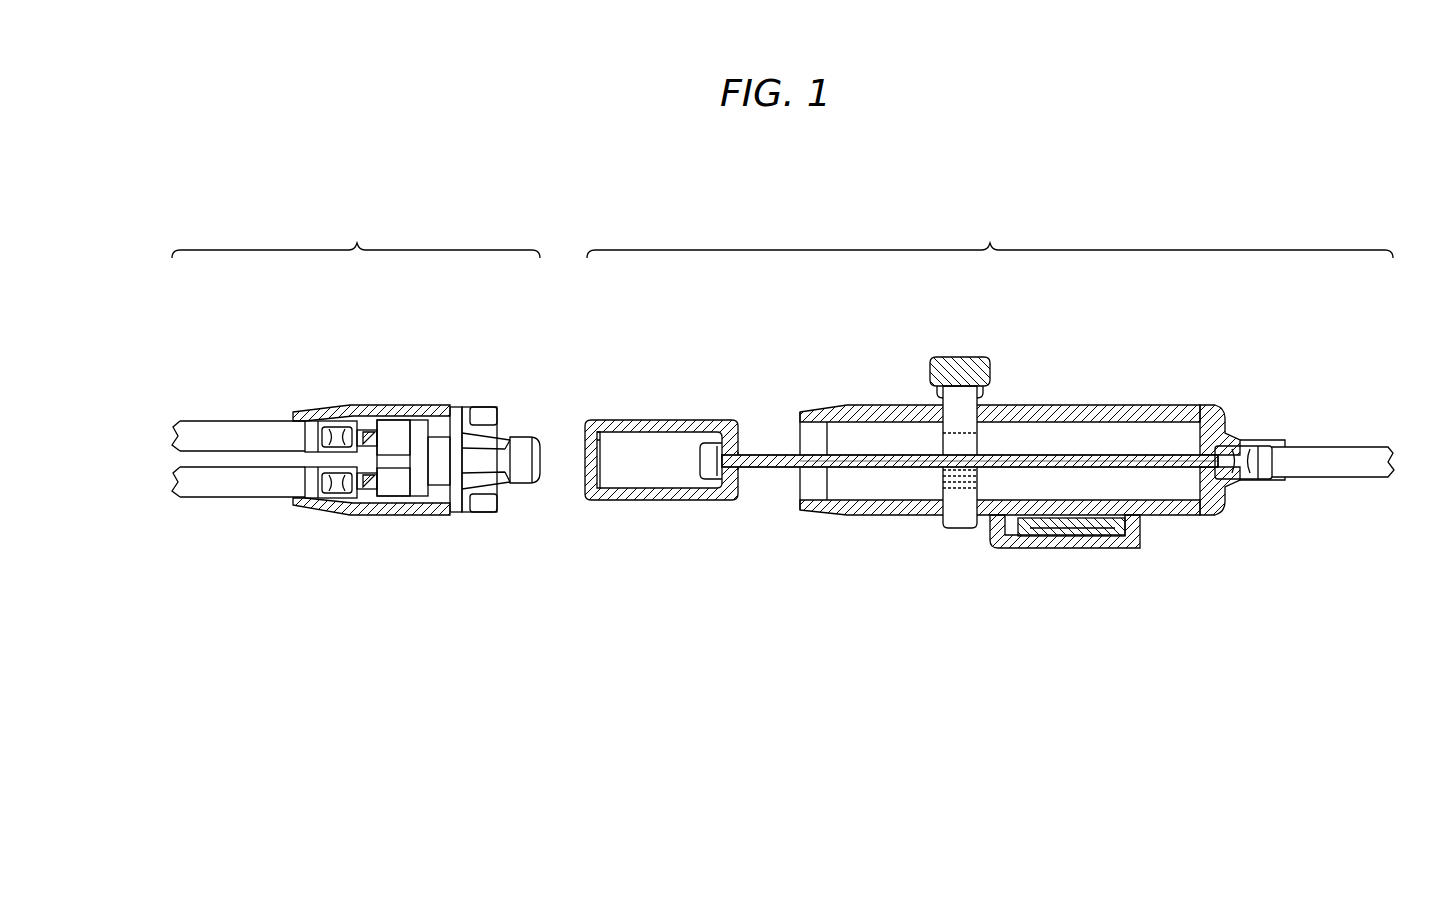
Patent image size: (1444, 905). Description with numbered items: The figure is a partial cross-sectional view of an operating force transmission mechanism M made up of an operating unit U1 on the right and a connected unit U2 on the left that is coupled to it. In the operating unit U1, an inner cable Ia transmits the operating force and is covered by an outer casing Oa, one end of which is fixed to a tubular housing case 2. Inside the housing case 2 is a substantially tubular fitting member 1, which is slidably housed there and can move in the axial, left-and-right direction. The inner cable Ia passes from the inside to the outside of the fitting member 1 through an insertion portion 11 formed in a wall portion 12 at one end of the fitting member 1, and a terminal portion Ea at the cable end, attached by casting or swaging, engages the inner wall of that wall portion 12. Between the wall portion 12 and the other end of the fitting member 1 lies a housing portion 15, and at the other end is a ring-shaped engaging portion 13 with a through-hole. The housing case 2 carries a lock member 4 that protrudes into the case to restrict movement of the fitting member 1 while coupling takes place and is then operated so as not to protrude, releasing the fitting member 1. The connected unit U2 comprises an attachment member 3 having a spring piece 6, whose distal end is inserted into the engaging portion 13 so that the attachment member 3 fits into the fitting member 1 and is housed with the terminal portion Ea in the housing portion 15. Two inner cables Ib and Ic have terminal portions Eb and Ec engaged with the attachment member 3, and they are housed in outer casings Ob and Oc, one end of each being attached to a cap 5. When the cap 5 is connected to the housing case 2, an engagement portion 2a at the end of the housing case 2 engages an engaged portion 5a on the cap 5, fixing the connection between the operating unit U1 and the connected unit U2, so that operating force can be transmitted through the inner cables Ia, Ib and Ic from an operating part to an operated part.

The fitting member 1 is at (678, 409).
The housing case 2 is at (990, 520).
The engagement portion 2a is at (815, 515).
The attachment member 3 is at (440, 450).
The lock member 4 is at (958, 372).
The cap 5 is at (420, 505).
The engaged portion 5a is at (470, 520).
The spring piece 6 is at (490, 500).
The insertion portion 11 is at (748, 452).
The wall portion 12 is at (735, 482).
The engaging portion 13 is at (593, 428).
The housing portion 15 is at (627, 498).
The terminal portion Ea is at (708, 475).
The terminal portion Eb is at (408, 425).
The terminal portion Ec is at (418, 513).
The inner cable Ia is at (1085, 455).
The inner cable Ib is at (365, 420).
The inner cable Ic is at (362, 505).
The outer casing Oa is at (1340, 455).
The outer casing Ob is at (258, 430).
The outer casing Oc is at (253, 488).
The operating unit U1 is at (990, 243).
The connected unit U2 is at (357, 243).
The operating force transmission mechanism M is at (766, 651).